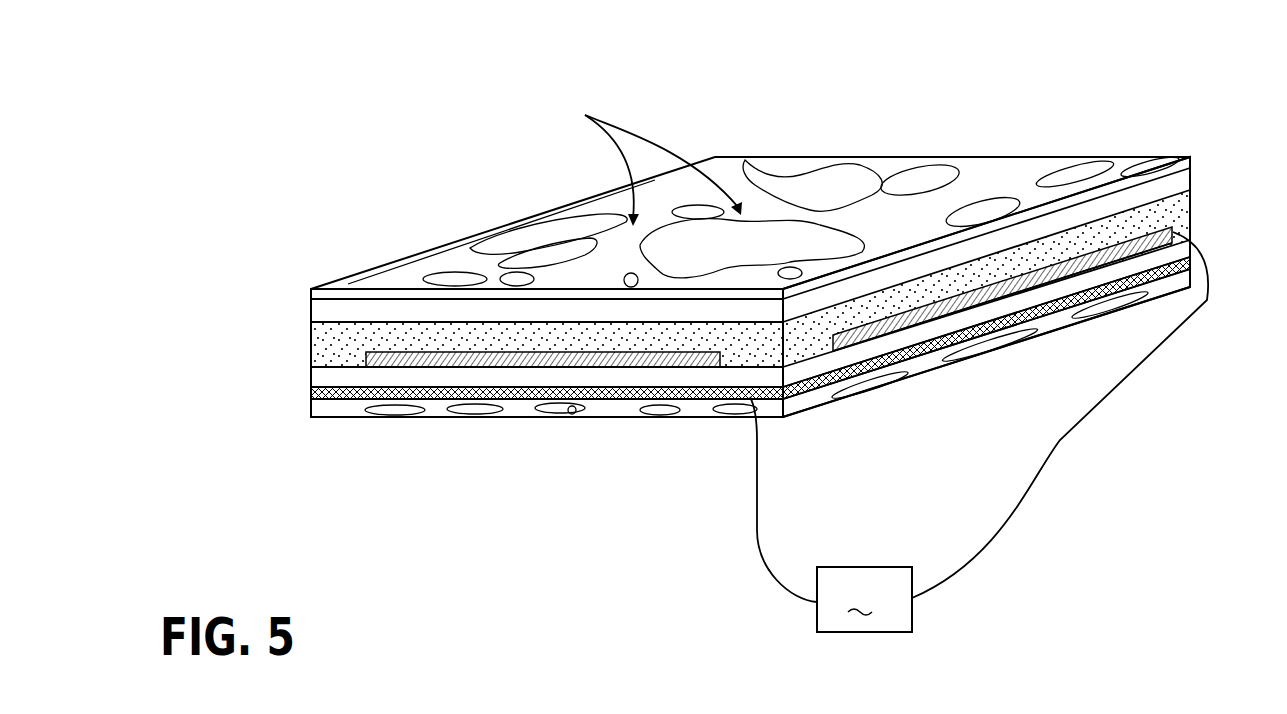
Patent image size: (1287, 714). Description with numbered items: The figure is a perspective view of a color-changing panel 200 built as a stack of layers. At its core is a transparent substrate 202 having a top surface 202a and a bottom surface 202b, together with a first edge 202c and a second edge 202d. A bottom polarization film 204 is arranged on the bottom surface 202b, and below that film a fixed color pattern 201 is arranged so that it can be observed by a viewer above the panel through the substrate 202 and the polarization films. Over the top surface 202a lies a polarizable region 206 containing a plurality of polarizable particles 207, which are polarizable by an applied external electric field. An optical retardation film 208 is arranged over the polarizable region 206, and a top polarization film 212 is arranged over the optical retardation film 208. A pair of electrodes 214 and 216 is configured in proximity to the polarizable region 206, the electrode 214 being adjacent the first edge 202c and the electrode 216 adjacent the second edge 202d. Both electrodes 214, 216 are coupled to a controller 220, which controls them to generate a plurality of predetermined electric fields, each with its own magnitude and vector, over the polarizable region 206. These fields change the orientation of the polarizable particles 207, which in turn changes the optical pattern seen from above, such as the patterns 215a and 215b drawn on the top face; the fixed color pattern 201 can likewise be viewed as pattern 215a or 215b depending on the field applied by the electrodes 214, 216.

The color-changing panel 200 is at (1058, 62).
The fixed color pattern 201 is at (311, 408).
The transparent substrate 202 is at (450, 380).
The top surface 202a is at (314, 352).
The bottom surface 202b is at (348, 402).
The first edge 202c is at (300, 372).
The second edge 202d is at (818, 363).
The bottom polarization film 204 is at (311, 390).
The polarizable region 206 is at (311, 340).
The polarizable particles 207 is at (583, 330).
The optical retardation film 208 is at (311, 313).
The top polarization film 212 is at (345, 282).
The electrode 214 is at (657, 370).
The optical pattern 215a is at (585, 150).
The optical pattern 215b is at (663, 165).
The electrode 216 is at (952, 315).
The controller 220 is at (864, 599).